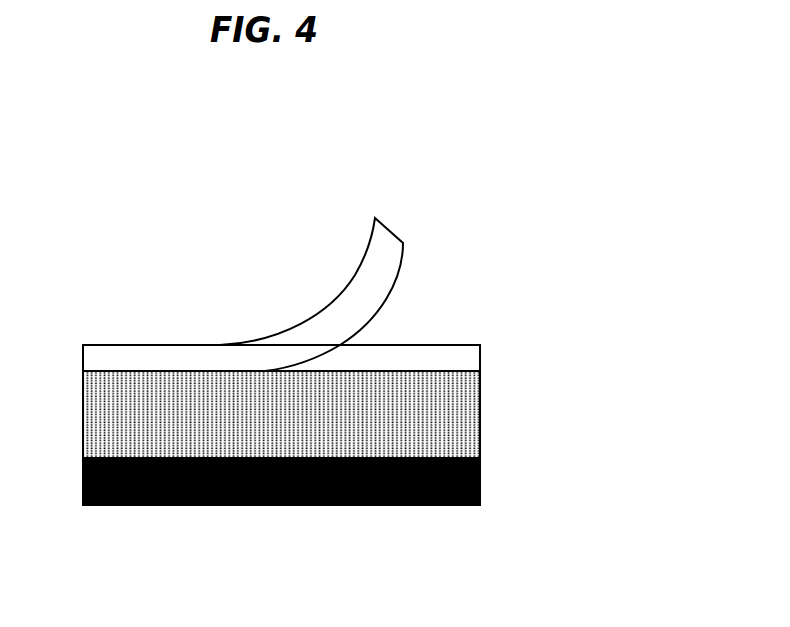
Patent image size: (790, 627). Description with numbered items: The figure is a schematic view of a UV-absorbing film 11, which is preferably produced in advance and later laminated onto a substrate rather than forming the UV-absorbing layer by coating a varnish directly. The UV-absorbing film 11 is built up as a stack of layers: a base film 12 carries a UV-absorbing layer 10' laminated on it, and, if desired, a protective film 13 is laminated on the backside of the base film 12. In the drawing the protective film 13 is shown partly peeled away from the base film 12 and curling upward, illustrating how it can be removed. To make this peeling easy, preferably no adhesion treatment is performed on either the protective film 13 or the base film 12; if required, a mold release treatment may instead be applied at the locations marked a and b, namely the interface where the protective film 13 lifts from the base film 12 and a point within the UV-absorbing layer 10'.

The UV-absorbing film 11 is at (316, 160).
The UV-absorbing layer 10' is at (356, 471).
The base film 12 is at (460, 385).
The protective film 13 is at (383, 272).
The mold release treatment location a is at (322, 352).
The mold release treatment location b is at (163, 463).